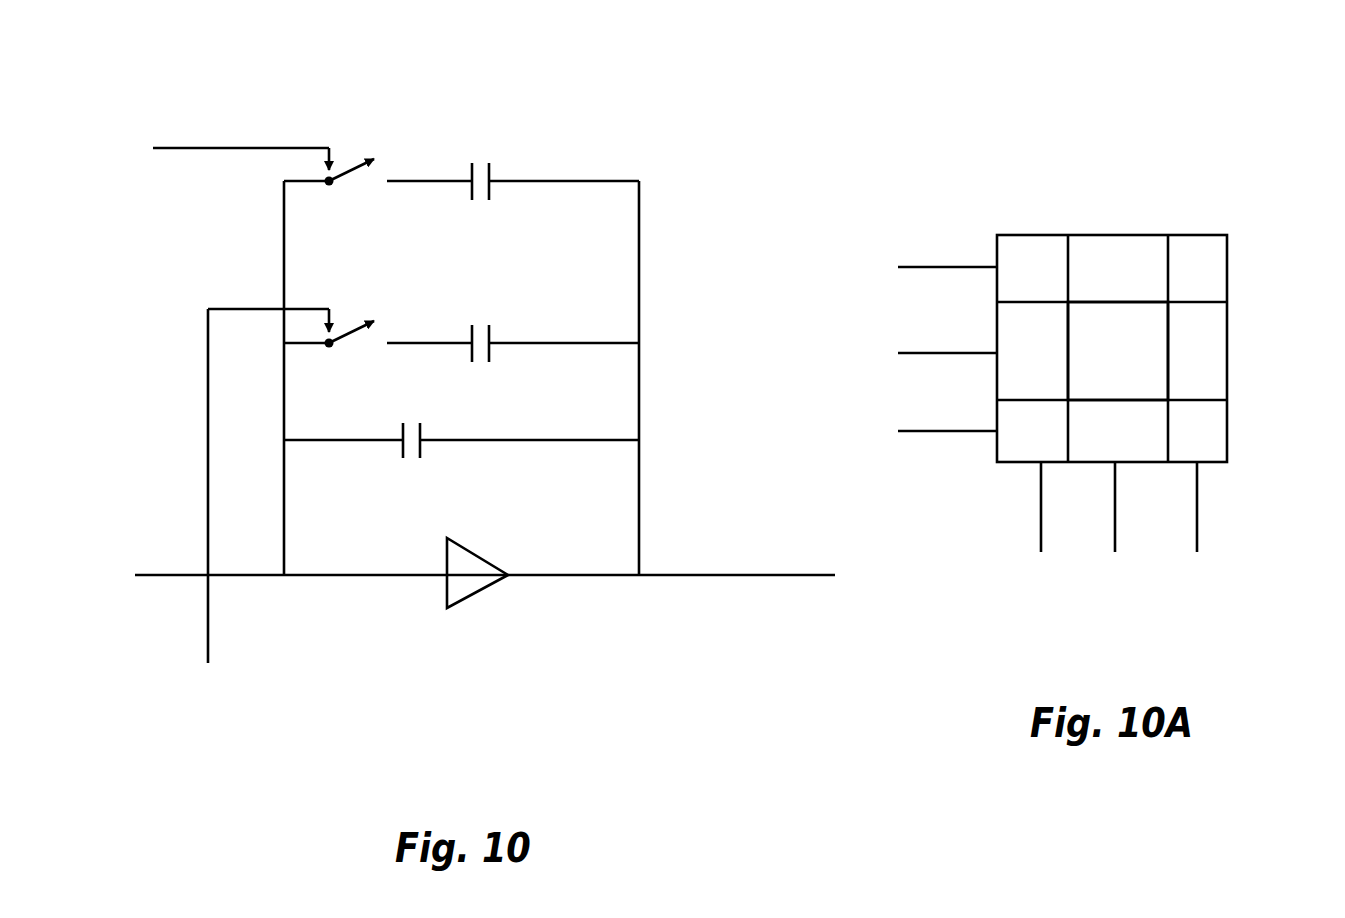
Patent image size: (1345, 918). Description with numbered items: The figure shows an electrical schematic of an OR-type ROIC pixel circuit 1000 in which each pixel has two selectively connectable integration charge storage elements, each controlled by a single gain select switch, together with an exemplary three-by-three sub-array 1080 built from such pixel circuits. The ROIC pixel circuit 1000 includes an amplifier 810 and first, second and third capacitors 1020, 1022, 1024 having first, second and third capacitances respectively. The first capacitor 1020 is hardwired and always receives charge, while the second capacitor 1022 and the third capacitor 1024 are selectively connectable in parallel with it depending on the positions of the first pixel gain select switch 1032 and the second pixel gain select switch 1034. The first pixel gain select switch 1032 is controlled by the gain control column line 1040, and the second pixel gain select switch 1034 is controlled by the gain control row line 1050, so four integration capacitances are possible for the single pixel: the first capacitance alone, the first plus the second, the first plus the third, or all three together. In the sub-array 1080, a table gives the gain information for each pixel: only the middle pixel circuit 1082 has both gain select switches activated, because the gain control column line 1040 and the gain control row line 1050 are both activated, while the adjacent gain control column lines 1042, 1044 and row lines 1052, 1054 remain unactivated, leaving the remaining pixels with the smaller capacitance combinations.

In FIG. 10, the ROIC pixel circuit 1000 is at (628, 43).
In FIG. 10, the gain control row line 1050 is at (243, 148).
In FIG. 10A, the gain control row line 1050 is at (952, 353).
In FIG. 10, the second pixel gain select switch SW2 1034 is at (346, 167).
In FIG. 10, the first pixel gain select switch SW1 1032 is at (346, 330).
In FIG. 10, the third capacitor 1024 is at (493, 172).
In FIG. 10, the second capacitor 1022 is at (493, 334).
In FIG. 10, the first capacitor 1020 is at (402, 423).
In FIG. 10, the gain control column line 1040 is at (208, 601).
In FIG. 10A, the gain control column line 1040 is at (1115, 513).
In FIG. 10, the amplifier 810 is at (470, 583).
In FIG. 10A, the 3×3 sub-array 1080 is at (1130, 157).
In FIG. 10A, the gain control row line 1052 is at (952, 267).
In FIG. 10A, the gain control row line 1054 is at (952, 431).
In FIG. 10A, the middle pixel circuit 1082 is at (1157, 318).
In FIG. 10A, the gain control column line 1042 is at (1041, 513).
In FIG. 10A, the gain control column line 1044 is at (1197, 513).